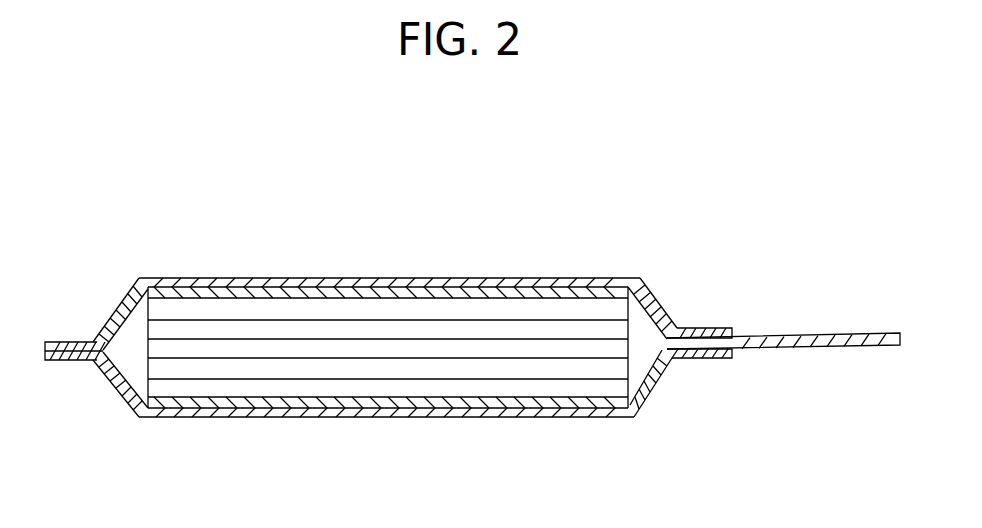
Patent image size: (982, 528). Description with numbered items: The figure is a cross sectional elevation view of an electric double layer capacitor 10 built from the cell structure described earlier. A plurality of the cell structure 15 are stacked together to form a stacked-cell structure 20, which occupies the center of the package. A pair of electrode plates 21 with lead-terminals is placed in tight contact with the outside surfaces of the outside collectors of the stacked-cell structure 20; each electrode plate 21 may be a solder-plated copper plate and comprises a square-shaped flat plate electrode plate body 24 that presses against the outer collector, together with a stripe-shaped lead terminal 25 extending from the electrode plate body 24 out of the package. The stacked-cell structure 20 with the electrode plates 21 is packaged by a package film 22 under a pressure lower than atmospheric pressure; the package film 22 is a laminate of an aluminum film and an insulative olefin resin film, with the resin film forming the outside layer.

The electrochemical cell 10 is at (646, 228).
The cell structure 15 is at (210, 303).
The stacked-cell structure 20 is at (130, 348).
The electrode plate 21 is at (278, 296).
The package film 22 is at (657, 297).
The electrode plate body 24 is at (475, 403).
The lead terminal 25 is at (803, 333).